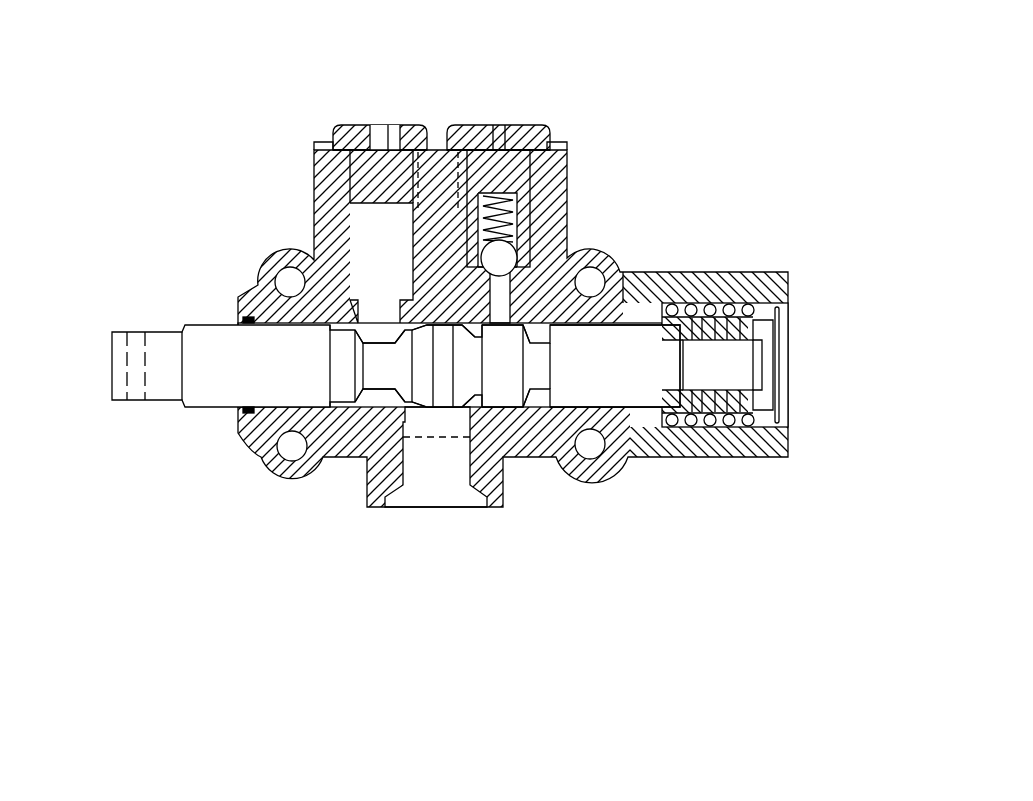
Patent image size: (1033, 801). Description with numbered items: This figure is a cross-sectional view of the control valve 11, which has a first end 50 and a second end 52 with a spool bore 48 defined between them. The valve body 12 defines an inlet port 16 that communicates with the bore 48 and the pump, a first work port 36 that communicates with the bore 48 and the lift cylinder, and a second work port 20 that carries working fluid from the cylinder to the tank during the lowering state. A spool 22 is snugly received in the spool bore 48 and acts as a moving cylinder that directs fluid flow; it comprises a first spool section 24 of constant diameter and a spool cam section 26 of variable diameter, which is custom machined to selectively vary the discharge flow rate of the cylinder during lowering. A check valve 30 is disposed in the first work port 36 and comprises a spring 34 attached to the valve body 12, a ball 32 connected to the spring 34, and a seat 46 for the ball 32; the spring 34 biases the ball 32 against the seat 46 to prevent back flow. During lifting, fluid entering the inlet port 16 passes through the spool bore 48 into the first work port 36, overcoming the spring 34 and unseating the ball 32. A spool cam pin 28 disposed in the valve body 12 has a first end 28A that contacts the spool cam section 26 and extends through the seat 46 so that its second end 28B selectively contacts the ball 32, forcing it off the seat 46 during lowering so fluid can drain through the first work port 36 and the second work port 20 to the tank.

The control valve 11 is at (238, 200).
The valve body 12 is at (716, 272).
The inlet port 16 is at (445, 463).
The second work port 20 is at (363, 223).
The spool 22 is at (188, 408).
The first spool section 24 is at (233, 377).
The spool cam section 26 is at (507, 372).
The spool cam pin 28 is at (543, 327).
The first end 28A is at (497, 330).
The second end 28B is at (683, 385).
The check valve 30 is at (545, 143).
The ball 32 is at (498, 190).
The spring 34 is at (517, 200).
The first work port 36 is at (493, 245).
The seat 46 is at (517, 270).
The spool bore 48 is at (372, 403).
The first end 50 is at (238, 312).
The second end 52 is at (790, 296).